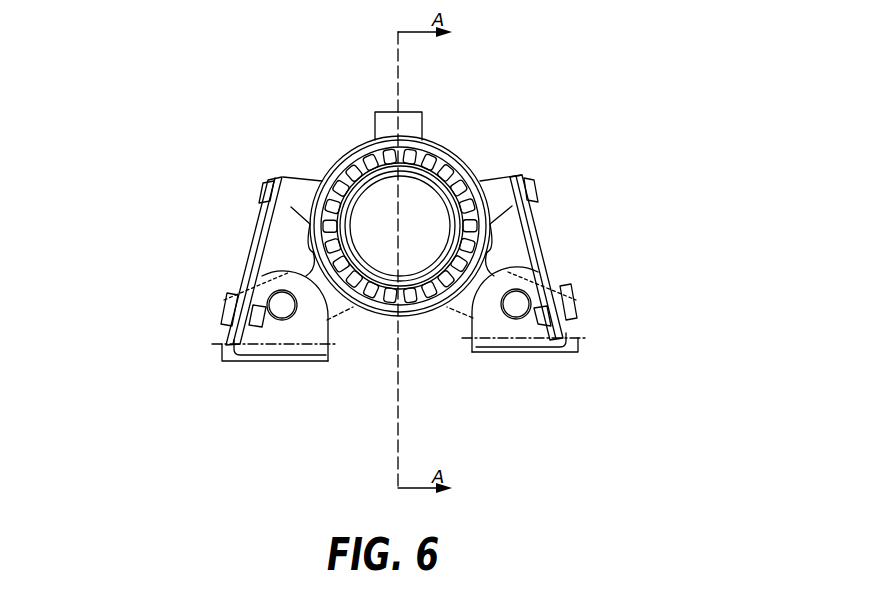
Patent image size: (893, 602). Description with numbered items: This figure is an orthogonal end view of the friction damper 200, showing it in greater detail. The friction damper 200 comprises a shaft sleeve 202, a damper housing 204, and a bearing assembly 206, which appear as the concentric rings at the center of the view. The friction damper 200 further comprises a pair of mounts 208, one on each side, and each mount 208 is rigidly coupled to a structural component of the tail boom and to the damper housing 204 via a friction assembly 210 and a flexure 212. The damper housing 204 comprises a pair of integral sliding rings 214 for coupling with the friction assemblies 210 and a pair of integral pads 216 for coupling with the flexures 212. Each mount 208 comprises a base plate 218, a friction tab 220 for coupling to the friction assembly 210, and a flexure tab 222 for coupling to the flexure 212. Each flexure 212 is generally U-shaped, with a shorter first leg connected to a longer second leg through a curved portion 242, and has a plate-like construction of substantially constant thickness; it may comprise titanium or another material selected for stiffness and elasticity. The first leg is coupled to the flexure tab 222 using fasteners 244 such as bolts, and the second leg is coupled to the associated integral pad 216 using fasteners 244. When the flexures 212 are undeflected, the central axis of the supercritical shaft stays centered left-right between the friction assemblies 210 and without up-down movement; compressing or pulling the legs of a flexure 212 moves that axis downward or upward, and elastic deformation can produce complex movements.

The friction damper 200 is at (513, 112).
The shaft sleeve 202 is at (340, 180).
The damper housing 204 is at (444, 140).
The bearing assembly 206 is at (362, 180).
The mount 208 is at (303, 362).
The friction assembly 210 is at (288, 362).
The flexure 212 is at (262, 228).
The integral sliding ring 214 is at (463, 310).
The integral pad 216 is at (300, 197).
The base plate 218 is at (279, 342).
The friction tab 220 is at (242, 287).
The flexure tab 222 is at (237, 307).
The curved portion 242 is at (260, 255).
The fastener 244 is at (265, 192).